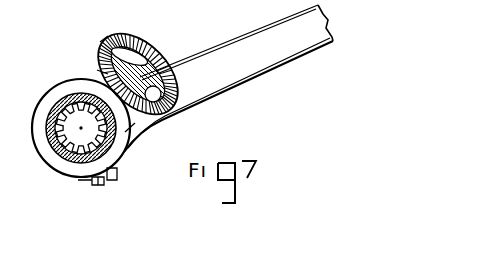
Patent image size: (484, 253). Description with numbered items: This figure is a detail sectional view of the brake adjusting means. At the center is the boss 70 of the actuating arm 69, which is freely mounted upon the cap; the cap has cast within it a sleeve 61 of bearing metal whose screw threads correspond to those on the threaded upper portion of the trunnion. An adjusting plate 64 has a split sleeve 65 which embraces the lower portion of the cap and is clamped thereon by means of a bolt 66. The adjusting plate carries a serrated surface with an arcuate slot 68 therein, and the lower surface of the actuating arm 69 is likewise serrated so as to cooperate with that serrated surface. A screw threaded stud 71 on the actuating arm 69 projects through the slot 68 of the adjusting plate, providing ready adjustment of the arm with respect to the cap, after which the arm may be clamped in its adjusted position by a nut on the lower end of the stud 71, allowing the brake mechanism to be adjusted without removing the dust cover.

The sleeve 61 is at (112, 47).
The adjusting plate 64 is at (115, 82).
The split sleeve 65 is at (103, 184).
The bolt 66 is at (118, 172).
The arcuate slot 68 is at (130, 70).
The actuating arm 69 is at (213, 72).
The boss 70 is at (54, 98).
The screw threaded stud 71 is at (160, 84).